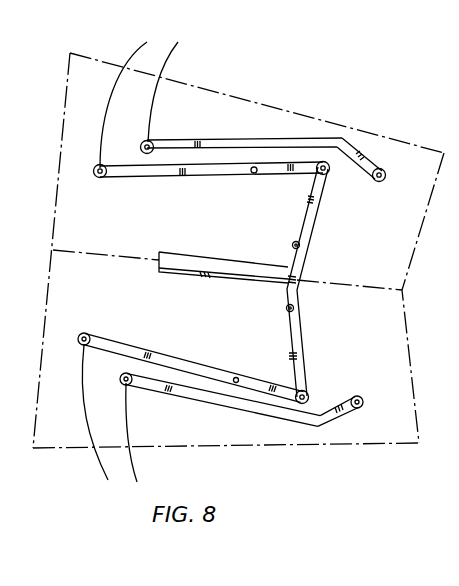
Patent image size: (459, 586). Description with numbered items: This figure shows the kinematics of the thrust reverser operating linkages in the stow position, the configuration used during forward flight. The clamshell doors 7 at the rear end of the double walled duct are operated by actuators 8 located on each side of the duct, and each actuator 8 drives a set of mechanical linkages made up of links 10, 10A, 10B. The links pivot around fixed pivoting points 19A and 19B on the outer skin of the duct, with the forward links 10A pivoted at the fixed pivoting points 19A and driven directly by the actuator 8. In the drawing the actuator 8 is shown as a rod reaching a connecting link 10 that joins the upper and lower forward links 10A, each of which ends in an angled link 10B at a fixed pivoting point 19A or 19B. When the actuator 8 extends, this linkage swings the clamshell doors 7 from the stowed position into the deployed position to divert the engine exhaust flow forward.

The clamshell door 7 is at (421, 116).
The actuator 8 is at (209, 277).
The link 10 is at (313, 216).
The forward link 10A is at (286, 176).
The link 10B is at (364, 176).
The fixed pivoting point 19A is at (386, 170).
The fixed pivoting point 19B is at (364, 406).